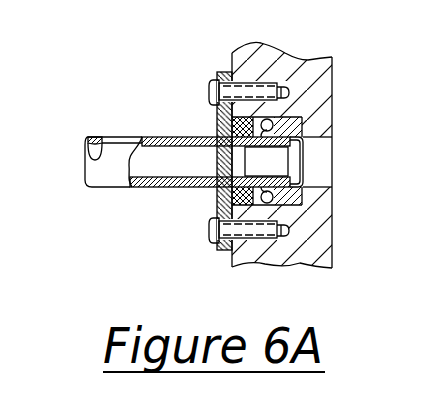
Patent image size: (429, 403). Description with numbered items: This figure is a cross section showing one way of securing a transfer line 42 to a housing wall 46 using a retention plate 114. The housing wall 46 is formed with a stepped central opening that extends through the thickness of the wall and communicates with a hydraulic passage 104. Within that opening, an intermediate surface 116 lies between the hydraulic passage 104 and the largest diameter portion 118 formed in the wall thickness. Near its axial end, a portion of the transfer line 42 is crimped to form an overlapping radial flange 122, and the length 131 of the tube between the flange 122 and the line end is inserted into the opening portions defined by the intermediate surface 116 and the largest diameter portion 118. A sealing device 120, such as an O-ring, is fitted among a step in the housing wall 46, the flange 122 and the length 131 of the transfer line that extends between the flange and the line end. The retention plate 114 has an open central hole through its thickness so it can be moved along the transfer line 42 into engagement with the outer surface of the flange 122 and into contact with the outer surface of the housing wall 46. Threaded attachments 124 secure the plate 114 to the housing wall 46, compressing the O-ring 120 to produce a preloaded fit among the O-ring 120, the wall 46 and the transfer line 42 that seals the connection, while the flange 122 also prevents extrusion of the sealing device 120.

The transfer line 42 is at (93, 138).
The housing wall 46 is at (327, 83).
The hydraulic passage 104 is at (320, 180).
The retention plate 114 is at (219, 72).
The intermediate surface 116 is at (320, 186).
The largest diameter portion 118 is at (245, 171).
The sealing device 120 is at (318, 101).
The radial flange 122 is at (232, 117).
The threaded attachment 124 is at (211, 88).
The length of the transfer line 131 is at (287, 121).